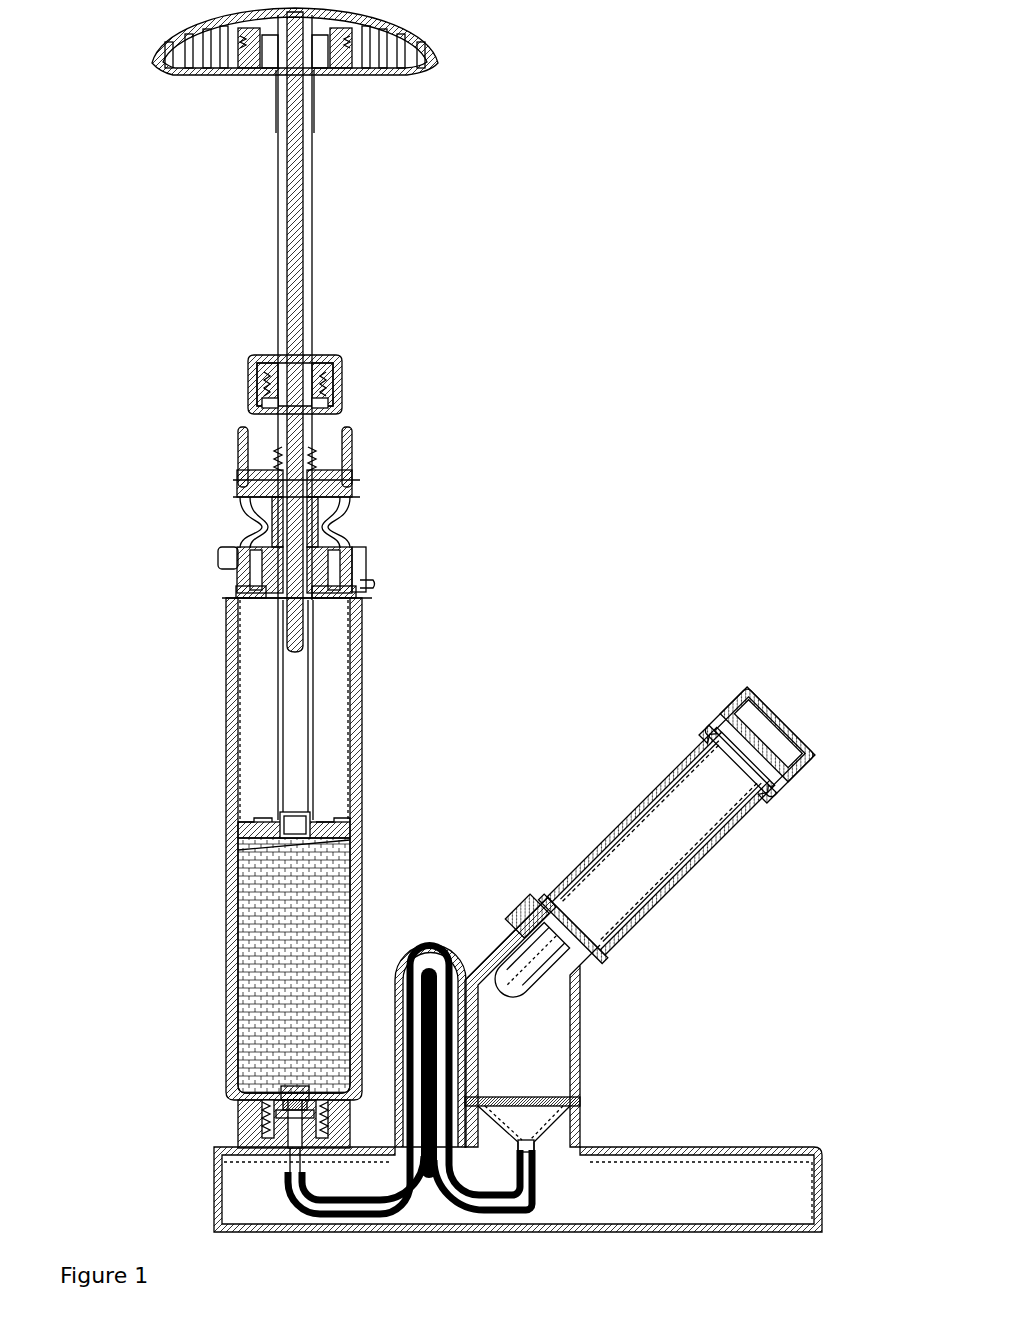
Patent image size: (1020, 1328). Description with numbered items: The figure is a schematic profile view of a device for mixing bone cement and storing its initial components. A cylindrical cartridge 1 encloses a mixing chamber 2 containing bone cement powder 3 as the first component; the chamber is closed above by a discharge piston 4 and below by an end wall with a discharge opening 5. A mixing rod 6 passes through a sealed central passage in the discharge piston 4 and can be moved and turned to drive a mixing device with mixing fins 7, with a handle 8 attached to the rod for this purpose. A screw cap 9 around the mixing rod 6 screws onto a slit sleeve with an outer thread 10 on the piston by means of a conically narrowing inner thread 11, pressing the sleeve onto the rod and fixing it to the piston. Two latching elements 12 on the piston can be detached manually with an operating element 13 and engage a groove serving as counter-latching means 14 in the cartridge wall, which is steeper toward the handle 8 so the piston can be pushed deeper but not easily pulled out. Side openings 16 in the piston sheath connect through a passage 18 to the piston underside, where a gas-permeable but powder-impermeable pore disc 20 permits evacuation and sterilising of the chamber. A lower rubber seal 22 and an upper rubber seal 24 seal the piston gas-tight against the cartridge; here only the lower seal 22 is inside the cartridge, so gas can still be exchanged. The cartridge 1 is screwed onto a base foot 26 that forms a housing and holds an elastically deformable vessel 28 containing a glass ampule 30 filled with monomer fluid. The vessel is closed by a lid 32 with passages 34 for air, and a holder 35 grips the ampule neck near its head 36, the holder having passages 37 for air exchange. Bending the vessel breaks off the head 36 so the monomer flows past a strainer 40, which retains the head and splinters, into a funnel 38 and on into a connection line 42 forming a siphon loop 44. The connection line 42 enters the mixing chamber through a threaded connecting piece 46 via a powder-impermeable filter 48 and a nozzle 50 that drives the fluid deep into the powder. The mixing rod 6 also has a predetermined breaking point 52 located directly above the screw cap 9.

The cartridge 1 is at (232, 710).
The mixing chamber 2 is at (265, 730).
The bone cement powder 3 is at (278, 982).
The discharge piston 4 is at (242, 561).
The discharge opening 5 is at (294, 1093).
The mixing rod 6 is at (283, 200).
The mixing device with mixing fins 7 is at (250, 827).
The handle 8 is at (218, 45).
The screw cap 9 is at (255, 367).
The sleeve with outer thread 10 is at (268, 460).
The inner thread 11 is at (310, 382).
The latching elements 12 is at (352, 480).
The operating element 13 is at (350, 447).
The groove / counter-latching means 14 is at (235, 573).
The side openings 16 is at (240, 530).
The passage 18 is at (330, 553).
The pore disc 20 is at (345, 592).
The lower rubber seal 22 is at (350, 575).
The upper rubber seal 24 is at (345, 497).
The base foot 26 is at (212, 1186).
The elastically deformable vessel 28 is at (587, 852).
The glass ampule 30 is at (647, 848).
The lid 32 is at (766, 742).
The passages 34 is at (738, 722).
The holder 35 is at (560, 937).
The head 36 is at (523, 972).
The passages 37 is at (580, 953).
The funnel 38 is at (527, 1130).
The strainer 40 is at (532, 1098).
The connection line 42 is at (333, 1206).
The loop 44 is at (430, 970).
The connecting piece 46 is at (272, 1132).
The filter 48 is at (270, 1112).
The nozzle 50 is at (285, 1104).
The predetermined breaking point 52 is at (307, 660).